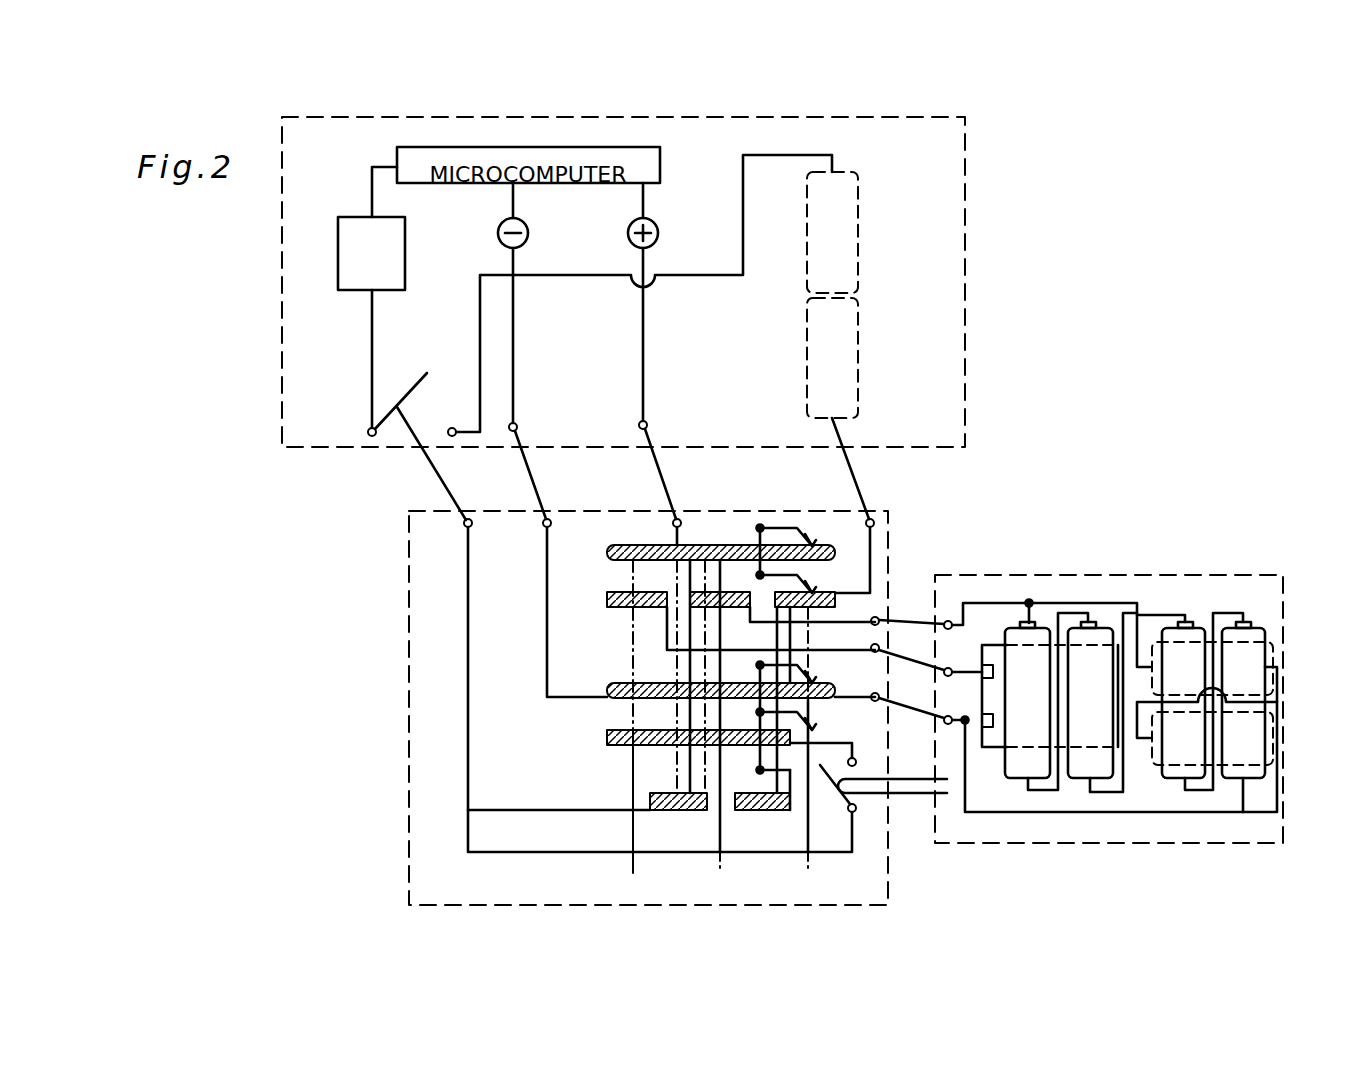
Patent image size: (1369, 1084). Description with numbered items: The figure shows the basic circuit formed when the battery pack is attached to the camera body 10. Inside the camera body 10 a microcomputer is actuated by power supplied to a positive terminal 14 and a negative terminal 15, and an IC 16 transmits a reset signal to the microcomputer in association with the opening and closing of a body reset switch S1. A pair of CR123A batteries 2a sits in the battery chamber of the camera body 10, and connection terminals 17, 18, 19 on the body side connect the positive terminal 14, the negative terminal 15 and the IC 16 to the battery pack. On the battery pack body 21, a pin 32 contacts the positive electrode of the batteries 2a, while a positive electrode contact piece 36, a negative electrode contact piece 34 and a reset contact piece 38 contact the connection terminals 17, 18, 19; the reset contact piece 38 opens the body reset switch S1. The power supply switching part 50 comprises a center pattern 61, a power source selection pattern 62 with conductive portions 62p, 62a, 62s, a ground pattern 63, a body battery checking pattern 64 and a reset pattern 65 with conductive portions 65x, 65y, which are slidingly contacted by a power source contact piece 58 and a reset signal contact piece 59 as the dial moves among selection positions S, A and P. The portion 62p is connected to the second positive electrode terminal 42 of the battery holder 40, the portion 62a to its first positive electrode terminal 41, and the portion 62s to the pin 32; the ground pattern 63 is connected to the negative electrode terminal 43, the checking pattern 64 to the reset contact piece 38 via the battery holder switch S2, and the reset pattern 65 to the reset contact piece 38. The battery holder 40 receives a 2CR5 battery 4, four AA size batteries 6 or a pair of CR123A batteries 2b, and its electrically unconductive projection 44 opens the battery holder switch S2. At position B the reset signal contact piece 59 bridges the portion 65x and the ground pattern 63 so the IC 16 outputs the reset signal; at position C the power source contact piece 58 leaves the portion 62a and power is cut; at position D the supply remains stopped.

The camera body 10 is at (965, 222).
The CR123A battery 2a is at (860, 225).
The IC 16 is at (338, 250).
The negative terminal 15 is at (498, 233).
The positive terminal 14 is at (628, 233).
The connection terminal 19 is at (368, 430).
The body reset switch S1 is at (440, 387).
The connection terminal 18 is at (518, 424).
The connection terminal 17 is at (647, 422).
The battery pack body 21 is at (890, 903).
The power supply switching part 50 is at (713, 878).
The reset contact piece 38 is at (472, 519).
The negative electrode contact piece 34 is at (551, 519).
The positive electrode contact piece 36 is at (681, 519).
The pin 32 is at (874, 521).
The power source selection position P is at (628, 865).
The power source selection position A is at (718, 862).
The power source selection position S is at (806, 862).
The center pattern 61 is at (607, 553).
The power source selection pattern 62 is at (607, 607).
The electrically conductive portion for 2CR5 battery 62p is at (607, 598).
The electrically conductive portion for AA size battery and CR123A battery 62a is at (730, 590).
The electrically conductive portion for camera body battery 62s is at (805, 590).
The position D is at (668, 627).
The position B is at (708, 622).
The ground pattern 63 is at (607, 690).
The body battery checking pattern 64 is at (607, 738).
The reset pattern 65 is at (735, 795).
The electrically conductive portion of reset pattern 65x is at (675, 812).
The electrically conductive portion of reset pattern 65y is at (745, 812).
The position C is at (690, 755).
The power source contact piece 58 is at (762, 525).
The reset signal contact piece 59 is at (758, 770).
The battery holder switch S2 is at (862, 760).
The electrically unconductive projection 44 is at (900, 797).
The first positive electrode terminal 41 is at (948, 618).
The second positive electrode terminal 42 is at (944, 674).
The negative electrode terminal 43 is at (944, 724).
The battery holder 40 is at (1160, 575).
The 2CR5 battery 4 is at (1002, 770).
The AA size battery 6 is at (1262, 628).
The CR123A battery 2b is at (1275, 712).